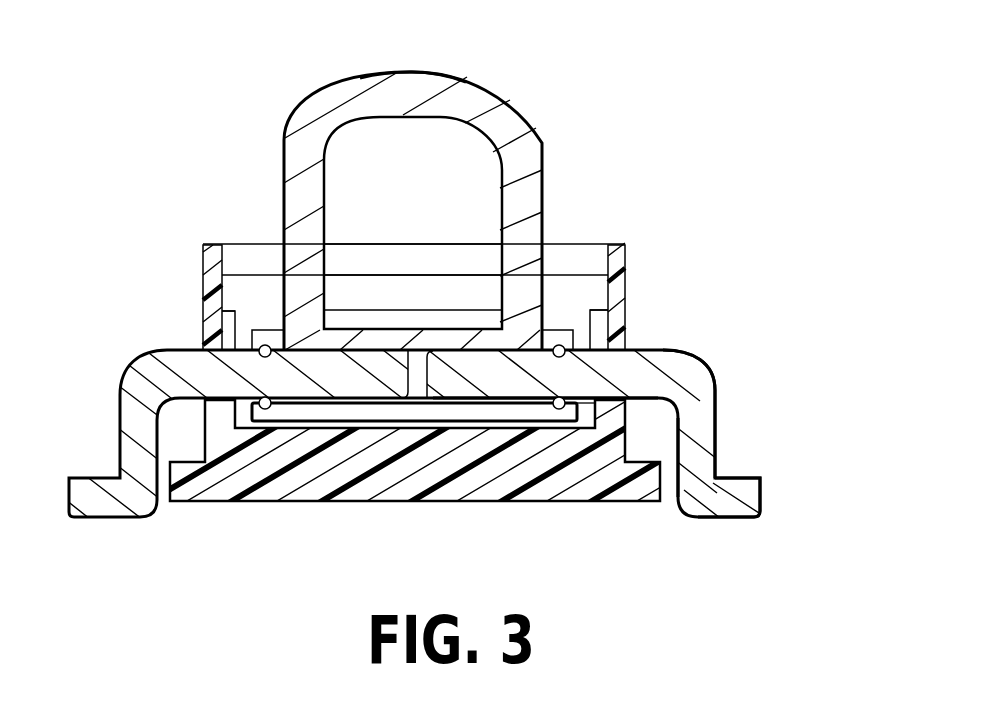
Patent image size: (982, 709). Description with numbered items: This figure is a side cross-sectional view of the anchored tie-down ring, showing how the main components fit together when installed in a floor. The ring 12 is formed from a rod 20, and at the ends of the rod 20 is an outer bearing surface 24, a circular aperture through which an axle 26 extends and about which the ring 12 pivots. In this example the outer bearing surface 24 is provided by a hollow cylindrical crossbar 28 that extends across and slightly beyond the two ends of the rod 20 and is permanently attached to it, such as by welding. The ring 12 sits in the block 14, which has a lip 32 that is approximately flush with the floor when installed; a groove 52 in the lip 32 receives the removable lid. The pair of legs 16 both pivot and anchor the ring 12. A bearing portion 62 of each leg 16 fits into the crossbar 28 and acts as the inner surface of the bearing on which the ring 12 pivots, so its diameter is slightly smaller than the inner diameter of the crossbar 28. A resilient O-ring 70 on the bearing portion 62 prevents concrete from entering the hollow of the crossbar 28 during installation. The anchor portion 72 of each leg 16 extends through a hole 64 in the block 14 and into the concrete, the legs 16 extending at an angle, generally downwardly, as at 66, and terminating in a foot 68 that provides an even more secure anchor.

The ring 12 is at (443, 175).
The block 14 is at (620, 507).
The legs 16 is at (463, 424).
The rod 20 is at (442, 72).
The outer bearing surface 24 is at (304, 397).
The axle 26 is at (493, 393).
The crossbar 28 is at (457, 329).
The lip 32 is at (622, 245).
The groove 52 is at (447, 264).
The bearing portion 62 is at (458, 383).
The hole 64 is at (628, 350).
The angled extension of leg 66 is at (717, 413).
The foot 68 is at (760, 496).
The O-ring 70 is at (265, 346).
The anchor portion 72 is at (717, 452).